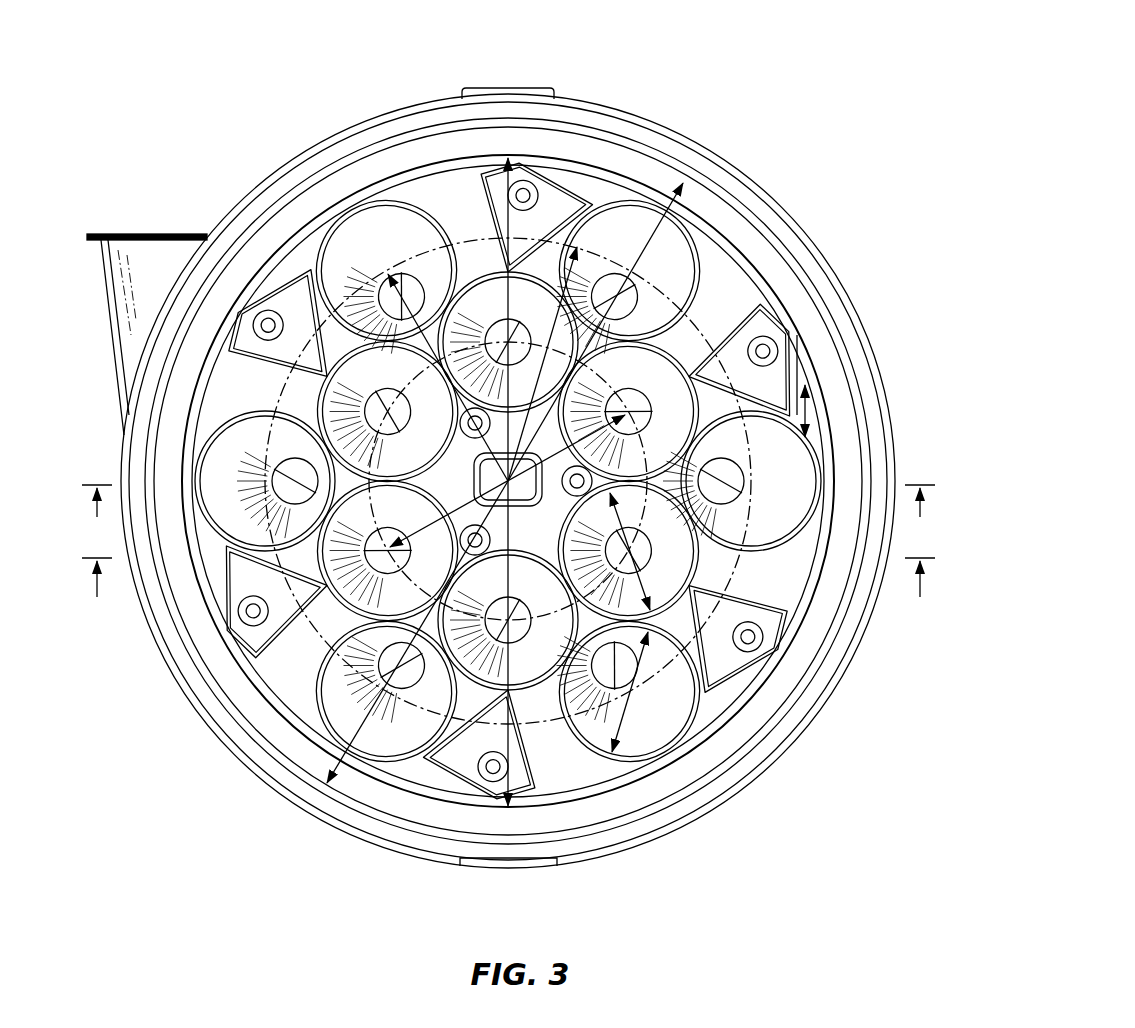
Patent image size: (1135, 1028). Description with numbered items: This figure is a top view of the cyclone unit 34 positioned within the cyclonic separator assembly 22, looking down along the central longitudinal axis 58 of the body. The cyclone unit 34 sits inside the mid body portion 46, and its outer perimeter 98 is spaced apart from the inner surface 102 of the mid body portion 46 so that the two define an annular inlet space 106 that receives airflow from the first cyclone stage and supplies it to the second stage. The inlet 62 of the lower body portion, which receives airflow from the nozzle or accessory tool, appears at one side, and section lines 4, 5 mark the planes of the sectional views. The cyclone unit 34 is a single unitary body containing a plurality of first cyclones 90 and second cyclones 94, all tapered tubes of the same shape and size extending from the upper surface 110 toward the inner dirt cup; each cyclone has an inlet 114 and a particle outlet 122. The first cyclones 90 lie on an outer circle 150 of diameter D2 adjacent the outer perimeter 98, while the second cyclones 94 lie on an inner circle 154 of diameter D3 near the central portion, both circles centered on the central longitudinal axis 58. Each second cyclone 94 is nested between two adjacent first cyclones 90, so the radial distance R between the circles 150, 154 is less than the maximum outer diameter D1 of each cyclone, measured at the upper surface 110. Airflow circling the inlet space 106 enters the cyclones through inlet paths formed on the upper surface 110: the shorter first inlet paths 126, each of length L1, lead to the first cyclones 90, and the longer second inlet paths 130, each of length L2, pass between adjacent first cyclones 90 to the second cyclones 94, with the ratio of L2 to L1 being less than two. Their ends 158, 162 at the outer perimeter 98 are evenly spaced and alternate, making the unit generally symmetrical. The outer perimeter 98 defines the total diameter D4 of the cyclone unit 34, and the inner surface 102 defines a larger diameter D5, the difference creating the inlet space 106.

The cyclonic separator assembly 22 is at (750, 58).
The cyclone unit 34 is at (227, 407).
The mid body portion 46 is at (856, 688).
The central longitudinal axis 58 is at (476, 481).
The inlet 62 is at (140, 235).
The first cyclones 90 is at (793, 500).
The second cyclones 94 is at (742, 228).
The outer perimeter 98 is at (367, 183).
The inner surface 102 is at (712, 196).
The inlet space 106 is at (198, 630).
The upper surface 110 is at (421, 775).
The inlet 114 is at (810, 349).
The particle outlet 122 is at (345, 718).
The first inlet paths 126 is at (830, 417).
The second inlet paths 130 is at (815, 313).
The outer circle 150 is at (465, 277).
The inner circle 154 is at (585, 752).
The ends of first inlet paths 158 is at (835, 343).
The ends of second inlet paths 162 is at (780, 262).
The section line 4- 4 is at (508, 588).
The section line 5- 5 is at (508, 514).
The maximum outer diameter D1 is at (648, 622).
The outer circle diameter D2 is at (412, 268).
The inner circle diameter D3 is at (350, 757).
The total diameter D4 is at (553, 337).
The mid body inner diameter D5 is at (688, 170).
The radial distance R is at (585, 228).
The first length L1 is at (830, 385).
The second length L2 is at (815, 267).